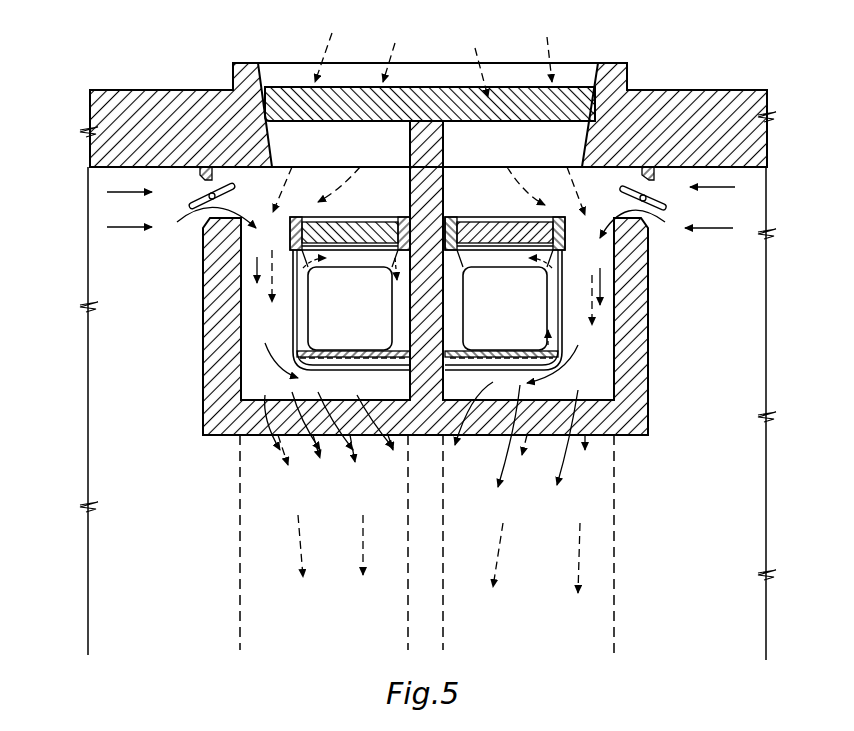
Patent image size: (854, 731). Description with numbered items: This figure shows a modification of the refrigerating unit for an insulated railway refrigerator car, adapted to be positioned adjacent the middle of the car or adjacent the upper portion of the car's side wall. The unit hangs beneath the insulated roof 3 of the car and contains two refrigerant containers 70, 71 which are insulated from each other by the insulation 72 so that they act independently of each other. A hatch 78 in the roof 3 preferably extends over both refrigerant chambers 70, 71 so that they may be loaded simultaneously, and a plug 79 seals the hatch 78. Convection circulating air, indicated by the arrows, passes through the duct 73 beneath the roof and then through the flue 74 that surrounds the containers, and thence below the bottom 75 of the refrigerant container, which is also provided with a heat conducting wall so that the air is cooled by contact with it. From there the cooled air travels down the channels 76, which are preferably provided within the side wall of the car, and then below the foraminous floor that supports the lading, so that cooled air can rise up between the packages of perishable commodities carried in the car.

The roof 3 is at (428, 361).
The refrigerant container 70 is at (350, 293).
The refrigerant container 71 is at (505, 293).
The insulation 72 is at (426, 260).
The duct 73 is at (206, 187).
The flue 74 is at (425, 278).
The bottom of the refrigerant container 75 is at (345, 371).
The channels 76 is at (240, 617).
The hatch 78 is at (427, 136).
The plug 79 is at (430, 101).